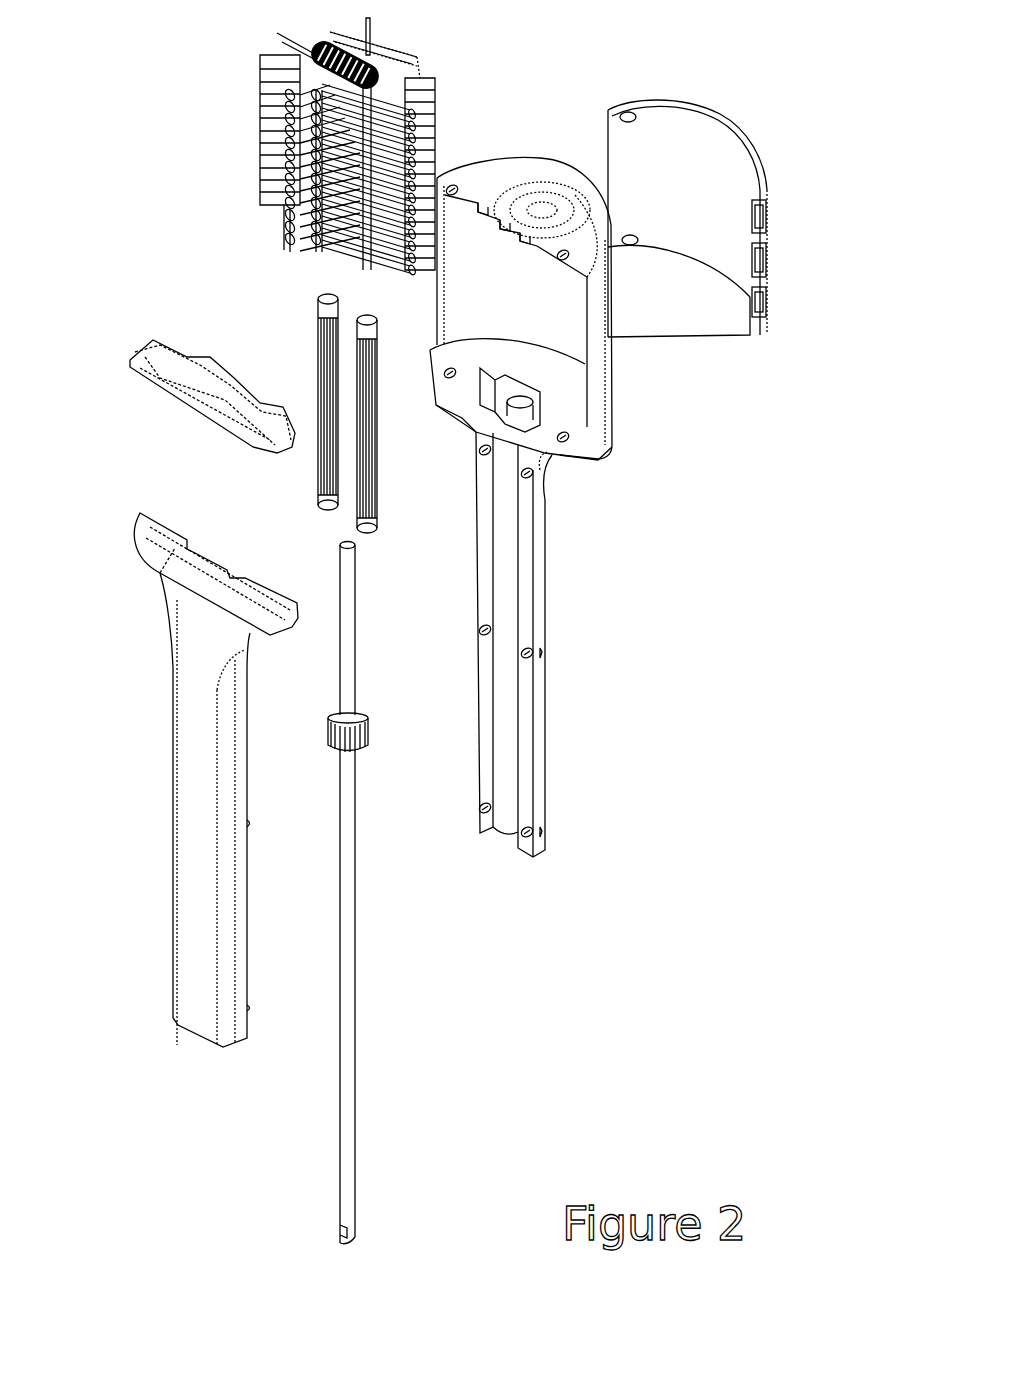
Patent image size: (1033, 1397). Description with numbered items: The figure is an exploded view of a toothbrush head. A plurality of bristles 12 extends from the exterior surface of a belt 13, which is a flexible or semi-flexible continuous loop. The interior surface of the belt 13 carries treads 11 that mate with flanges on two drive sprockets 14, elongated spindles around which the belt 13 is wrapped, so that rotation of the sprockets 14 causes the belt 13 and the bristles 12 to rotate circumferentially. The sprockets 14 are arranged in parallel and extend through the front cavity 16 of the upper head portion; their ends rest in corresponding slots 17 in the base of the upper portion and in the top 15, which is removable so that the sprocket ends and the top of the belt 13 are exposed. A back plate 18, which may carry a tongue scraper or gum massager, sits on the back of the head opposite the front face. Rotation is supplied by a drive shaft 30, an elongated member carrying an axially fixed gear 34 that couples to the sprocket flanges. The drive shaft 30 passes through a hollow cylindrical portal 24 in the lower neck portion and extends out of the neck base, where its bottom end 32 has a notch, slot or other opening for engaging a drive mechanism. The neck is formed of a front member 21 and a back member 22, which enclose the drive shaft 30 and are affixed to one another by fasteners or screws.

The treads 11 is at (370, 63).
The bristles 12 is at (287, 190).
The belt 13 is at (313, 53).
The drive sprockets 14 is at (360, 525).
The top 15 is at (535, 196).
The front cavity 16 is at (558, 322).
The slots 17 is at (530, 395).
The back plate 18 is at (700, 100).
The front member 21 is at (185, 882).
The back member 22 is at (540, 797).
The hollow cylindrical portal 24 is at (504, 617).
The drive shaft 30 is at (360, 1098).
The bottom end 32 is at (338, 1230).
The gear 34 is at (368, 748).